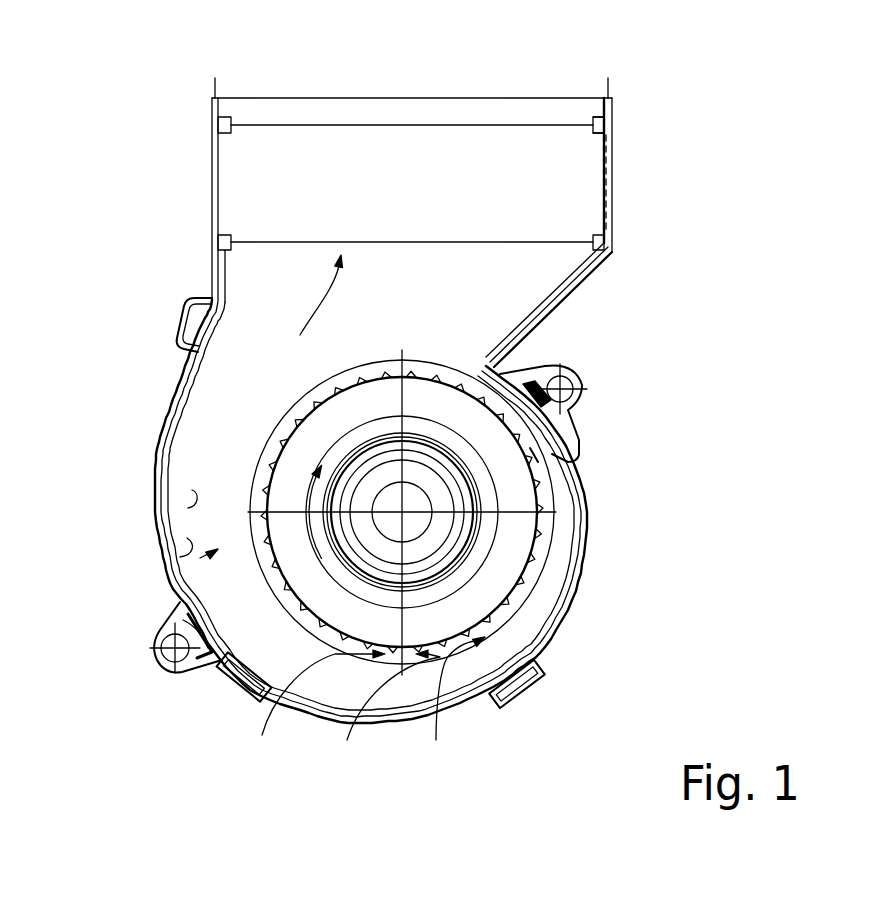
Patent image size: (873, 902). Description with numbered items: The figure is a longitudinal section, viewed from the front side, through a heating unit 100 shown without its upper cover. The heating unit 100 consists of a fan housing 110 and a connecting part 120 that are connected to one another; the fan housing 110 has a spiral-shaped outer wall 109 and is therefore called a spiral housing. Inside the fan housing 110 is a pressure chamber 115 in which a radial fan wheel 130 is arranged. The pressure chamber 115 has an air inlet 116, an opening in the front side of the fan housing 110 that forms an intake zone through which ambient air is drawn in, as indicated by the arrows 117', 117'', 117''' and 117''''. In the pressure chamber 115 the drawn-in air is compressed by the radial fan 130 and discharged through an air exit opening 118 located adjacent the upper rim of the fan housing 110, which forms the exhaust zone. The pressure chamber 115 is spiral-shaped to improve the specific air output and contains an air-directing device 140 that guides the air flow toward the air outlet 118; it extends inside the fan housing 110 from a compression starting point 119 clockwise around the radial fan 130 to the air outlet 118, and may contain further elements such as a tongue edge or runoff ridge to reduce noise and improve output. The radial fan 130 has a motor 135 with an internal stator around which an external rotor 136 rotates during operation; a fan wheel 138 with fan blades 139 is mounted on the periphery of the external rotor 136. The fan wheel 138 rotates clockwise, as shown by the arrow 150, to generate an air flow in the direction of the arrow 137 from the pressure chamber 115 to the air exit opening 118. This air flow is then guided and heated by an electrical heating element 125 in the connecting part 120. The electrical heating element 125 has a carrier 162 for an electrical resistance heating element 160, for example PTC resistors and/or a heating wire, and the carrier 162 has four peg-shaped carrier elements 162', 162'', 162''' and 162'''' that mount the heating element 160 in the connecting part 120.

The heating unit 100 is at (634, 72).
The spiral-shaped outer wall 109 is at (187, 538).
The fan housing 110 is at (152, 466).
The pressure chamber 115 is at (208, 555).
The air inlet 116 is at (550, 570).
The arrow 117' is at (250, 700).
The arrow 117'' is at (313, 726).
The arrow 117''' is at (378, 746).
The arrow 117'''' is at (664, 446).
The air exit opening 118 is at (508, 343).
The compression starting point 119 is at (588, 388).
The connecting part 120 is at (192, 180).
The electrical heating element 125 is at (271, 124).
The radial fan wheel 130 is at (272, 564).
The motor 135 is at (421, 526).
The external rotor 136 is at (545, 362).
The arrow 137 is at (320, 308).
The fan wheel 138 is at (528, 530).
The fan blades 139 is at (278, 422).
The air-directing device 140 is at (192, 490).
The arrow 150 is at (297, 500).
The electrical resistance heating element 160 is at (563, 188).
The carrier 162 is at (539, 68).
The peg-shaped carrier element 162' is at (137, 125).
The peg-shaped carrier element 162'' is at (137, 230).
The peg-shaped carrier element 162''' is at (690, 238).
The peg-shaped carrier element 162'''' is at (695, 124).